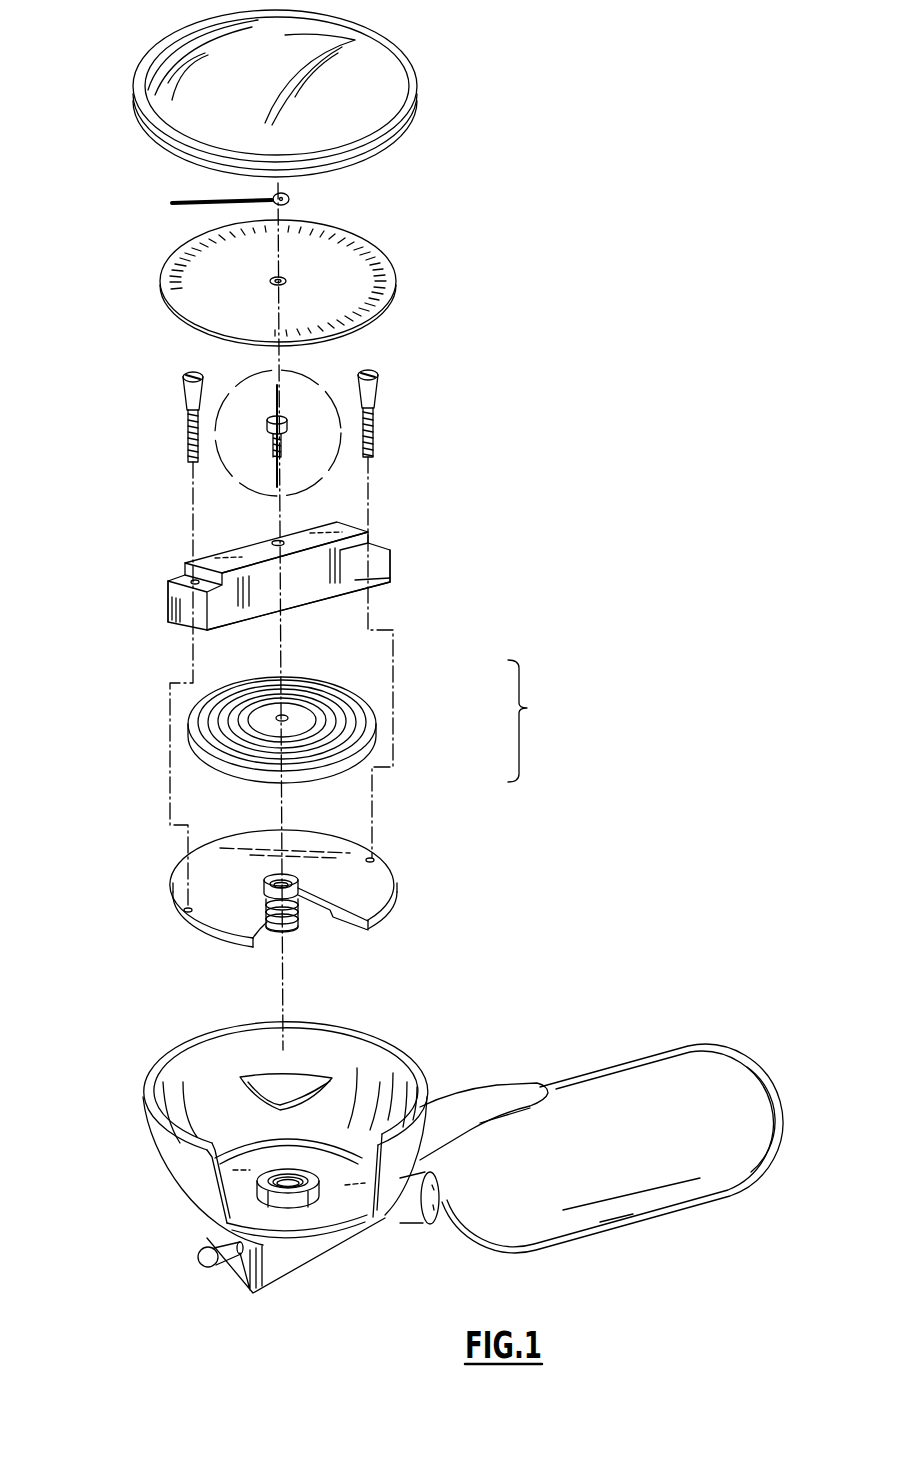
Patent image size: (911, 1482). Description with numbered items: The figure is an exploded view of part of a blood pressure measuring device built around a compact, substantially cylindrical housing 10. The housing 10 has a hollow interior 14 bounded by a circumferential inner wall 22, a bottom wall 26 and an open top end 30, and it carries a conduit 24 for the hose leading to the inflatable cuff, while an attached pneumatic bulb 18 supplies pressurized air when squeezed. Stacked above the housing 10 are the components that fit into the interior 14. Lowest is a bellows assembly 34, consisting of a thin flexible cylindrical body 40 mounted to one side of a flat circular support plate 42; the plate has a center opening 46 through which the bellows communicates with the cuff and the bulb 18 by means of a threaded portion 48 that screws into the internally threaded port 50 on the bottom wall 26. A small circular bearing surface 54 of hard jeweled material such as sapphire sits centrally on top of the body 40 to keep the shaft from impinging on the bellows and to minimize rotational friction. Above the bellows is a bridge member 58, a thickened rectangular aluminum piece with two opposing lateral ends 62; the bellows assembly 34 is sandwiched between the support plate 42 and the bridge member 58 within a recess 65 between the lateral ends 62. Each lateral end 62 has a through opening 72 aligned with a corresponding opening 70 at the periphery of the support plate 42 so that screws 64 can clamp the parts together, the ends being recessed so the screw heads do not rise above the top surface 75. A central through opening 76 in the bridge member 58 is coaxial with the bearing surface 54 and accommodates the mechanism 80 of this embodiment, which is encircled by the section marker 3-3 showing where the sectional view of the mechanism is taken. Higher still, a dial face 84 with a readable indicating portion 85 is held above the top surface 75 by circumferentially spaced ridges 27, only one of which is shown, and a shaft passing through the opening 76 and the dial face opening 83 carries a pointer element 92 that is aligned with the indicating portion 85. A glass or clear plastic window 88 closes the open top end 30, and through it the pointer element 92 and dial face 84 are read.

The housing 10 is at (531, 1024).
The hollow interior 14 is at (261, 1159).
The pneumatic bulb 18 is at (607, 1212).
The circumferential inner wall 22 is at (227, 1050).
The conduit 24 is at (198, 1255).
The bottom wall 26 is at (330, 1217).
The ridges 27 is at (243, 1080).
The open top end 30 is at (162, 1105).
The bellows assembly 34 is at (535, 721).
The thin cylindrical body 40 is at (269, 729).
The flat circular support plate 42 is at (277, 898).
The center opening 46 is at (370, 917).
The threaded portion 48 is at (297, 927).
The port 50 is at (292, 1187).
The circular bearing surface 54 is at (293, 715).
The bridge member 58 is at (281, 569).
The lateral ends 62 is at (168, 607).
The screws 64 is at (188, 418).
The recess 65 is at (295, 600).
The openings 70 is at (375, 860).
The through opening 72 is at (195, 582).
The top surface 75 is at (282, 558).
The central through opening 76 is at (273, 540).
The mechanism 80 is at (282, 468).
The dial face opening 83 is at (288, 280).
The dial face 84 is at (260, 283).
The readable indicating portion 85 is at (183, 263).
The window 88 is at (150, 115).
The pointer element 92 is at (187, 200).
The section line 3-3 is at (322, 388).